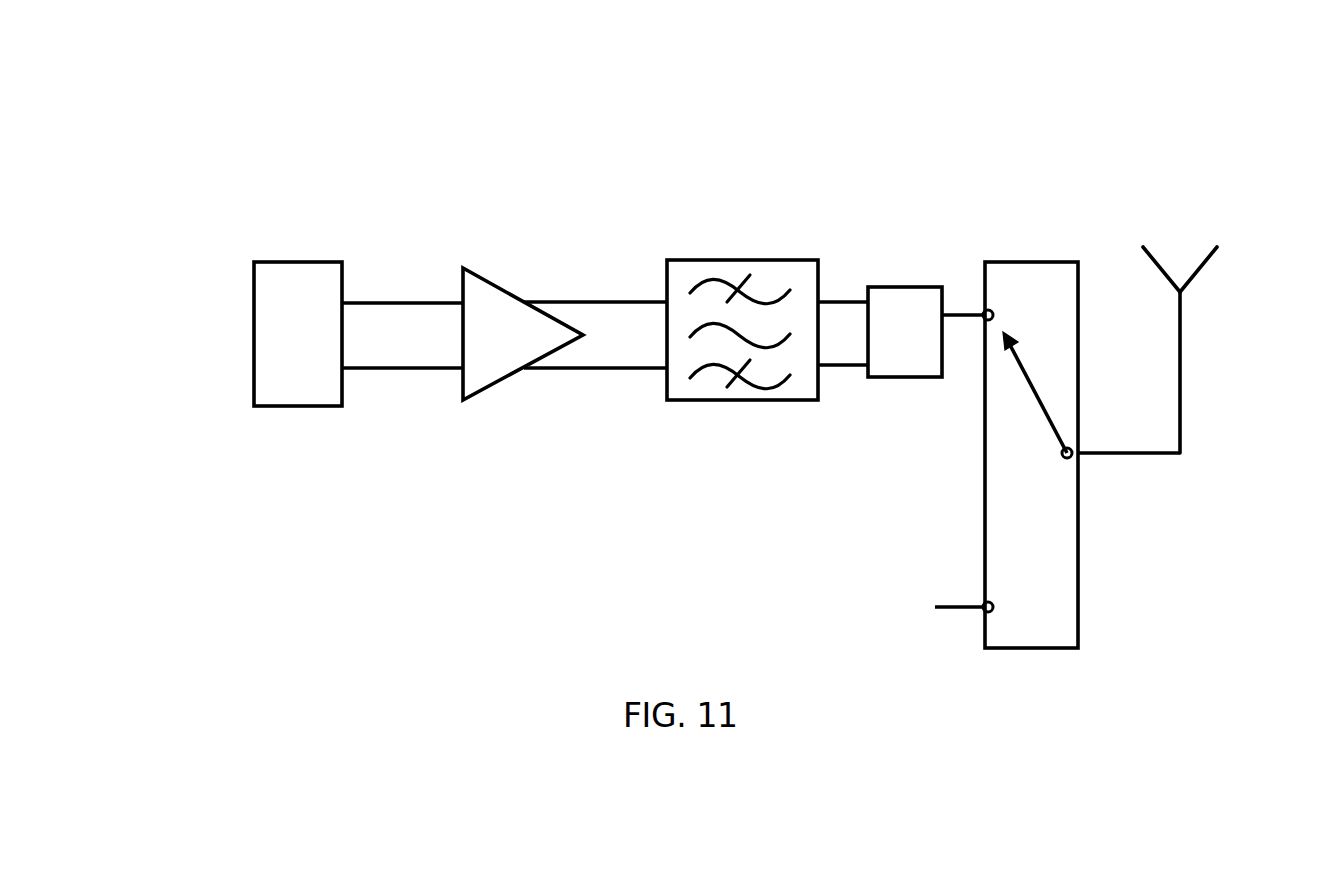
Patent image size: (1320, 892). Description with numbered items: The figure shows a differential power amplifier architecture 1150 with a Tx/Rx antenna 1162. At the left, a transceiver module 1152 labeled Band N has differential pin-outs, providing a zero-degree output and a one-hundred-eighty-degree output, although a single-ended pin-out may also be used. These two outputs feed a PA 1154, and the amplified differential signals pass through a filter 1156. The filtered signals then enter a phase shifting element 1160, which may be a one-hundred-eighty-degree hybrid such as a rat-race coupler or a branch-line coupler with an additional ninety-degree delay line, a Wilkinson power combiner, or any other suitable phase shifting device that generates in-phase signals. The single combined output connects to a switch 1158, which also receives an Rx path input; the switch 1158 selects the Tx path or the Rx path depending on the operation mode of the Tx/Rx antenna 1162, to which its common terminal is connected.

The differential power amplifier architecture 1150 is at (247, 163).
The transceiver module 1152 is at (255, 353).
The PA 1154 is at (485, 383).
The filter 1156 is at (710, 393).
The switch 1158 is at (1020, 650).
The phase shifting element 1160 is at (908, 285).
The Tx/Rx antenna 1162 is at (1212, 314).